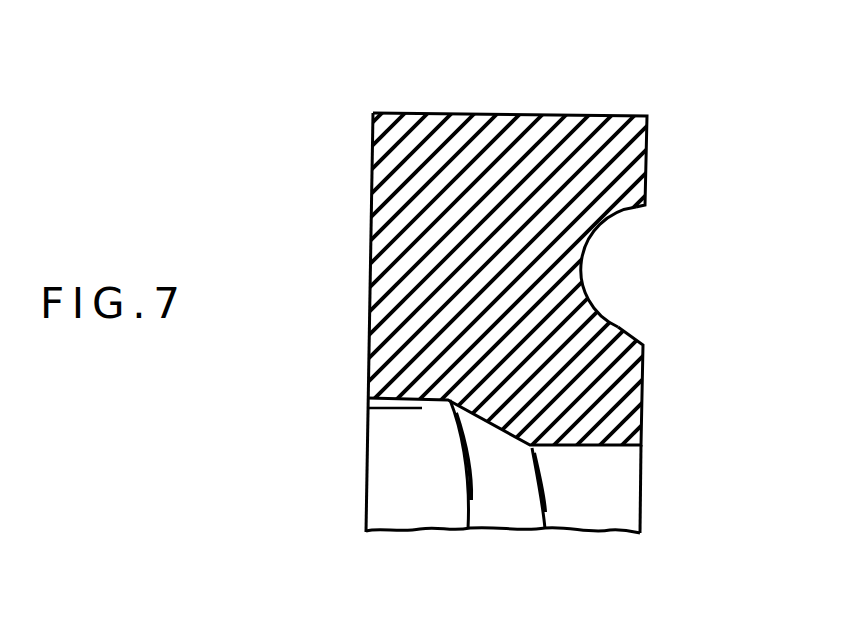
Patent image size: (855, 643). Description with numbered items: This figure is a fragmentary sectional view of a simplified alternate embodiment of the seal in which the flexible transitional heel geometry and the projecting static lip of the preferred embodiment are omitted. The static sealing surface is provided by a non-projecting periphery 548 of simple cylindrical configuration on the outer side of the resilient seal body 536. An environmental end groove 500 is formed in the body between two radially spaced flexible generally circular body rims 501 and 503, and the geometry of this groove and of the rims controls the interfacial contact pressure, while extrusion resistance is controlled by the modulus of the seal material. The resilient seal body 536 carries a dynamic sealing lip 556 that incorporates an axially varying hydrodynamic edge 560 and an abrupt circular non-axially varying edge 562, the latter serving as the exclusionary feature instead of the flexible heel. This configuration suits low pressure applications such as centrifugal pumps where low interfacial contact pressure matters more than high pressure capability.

The non-projecting periphery 548 is at (563, 115).
The flexible generally circular body rim 501 is at (617, 168).
The resilient seal body 536 is at (433, 215).
The environmental end groove 500 is at (625, 270).
The flexible generally circular body rim 503 is at (610, 397).
The axially varying hydrodynamic edge 560 is at (470, 424).
The dynamic sealing lip 556 is at (577, 420).
The abrupt circular non-axially varying edge 562 is at (641, 449).